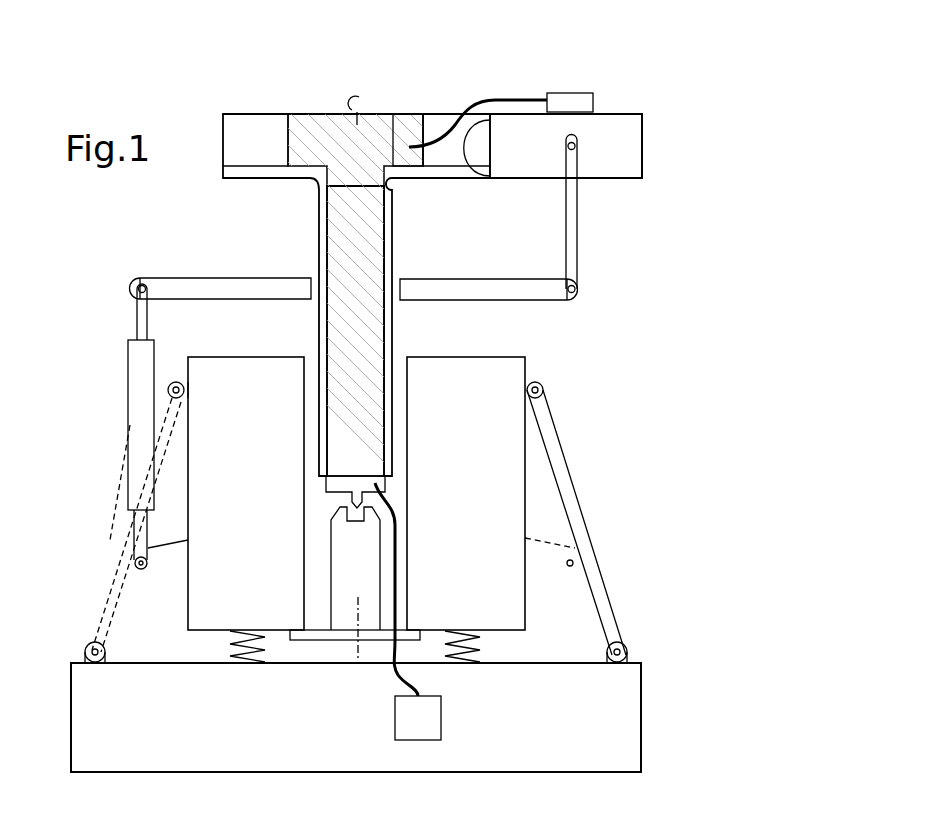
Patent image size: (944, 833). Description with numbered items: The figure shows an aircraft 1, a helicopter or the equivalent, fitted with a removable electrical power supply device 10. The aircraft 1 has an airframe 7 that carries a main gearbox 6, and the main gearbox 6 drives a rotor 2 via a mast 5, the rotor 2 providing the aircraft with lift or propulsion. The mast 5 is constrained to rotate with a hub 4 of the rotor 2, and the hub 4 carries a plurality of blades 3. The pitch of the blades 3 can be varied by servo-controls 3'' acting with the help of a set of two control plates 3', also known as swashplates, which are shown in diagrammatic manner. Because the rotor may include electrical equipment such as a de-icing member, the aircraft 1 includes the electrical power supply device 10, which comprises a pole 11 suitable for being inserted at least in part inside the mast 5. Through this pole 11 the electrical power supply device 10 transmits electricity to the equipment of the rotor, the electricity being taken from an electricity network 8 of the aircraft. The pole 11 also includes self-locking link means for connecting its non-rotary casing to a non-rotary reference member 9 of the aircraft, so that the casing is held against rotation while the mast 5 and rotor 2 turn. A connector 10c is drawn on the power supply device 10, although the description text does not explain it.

The aircraft 1 is at (687, 241).
The rotor 2 is at (660, 90).
The blades 3 is at (597, 146).
The control plates 3' is at (111, 385).
The servo-controls 3'' is at (128, 522).
The hub 4 is at (440, 125).
The mast 5 is at (440, 170).
The main gearbox 6 is at (503, 357).
The airframe 7 is at (580, 728).
The electricity network 8 is at (395, 718).
The non-rotary reference member 9 is at (331, 520).
The electrical power supply device 10 is at (313, 127).
The connector 10c is at (568, 93).
The pole 11 is at (418, 108).